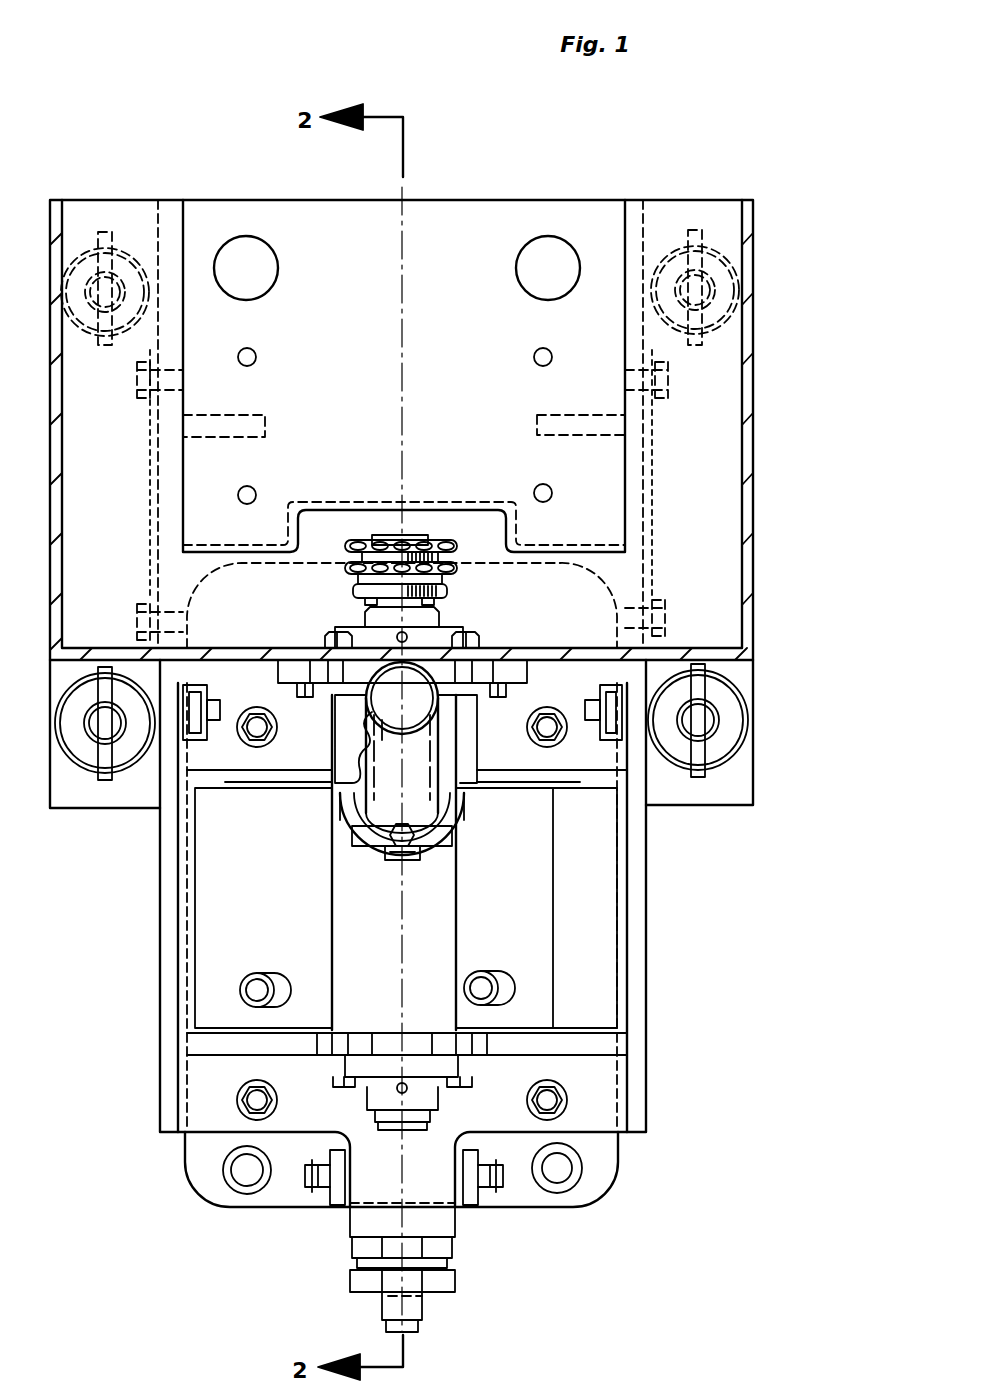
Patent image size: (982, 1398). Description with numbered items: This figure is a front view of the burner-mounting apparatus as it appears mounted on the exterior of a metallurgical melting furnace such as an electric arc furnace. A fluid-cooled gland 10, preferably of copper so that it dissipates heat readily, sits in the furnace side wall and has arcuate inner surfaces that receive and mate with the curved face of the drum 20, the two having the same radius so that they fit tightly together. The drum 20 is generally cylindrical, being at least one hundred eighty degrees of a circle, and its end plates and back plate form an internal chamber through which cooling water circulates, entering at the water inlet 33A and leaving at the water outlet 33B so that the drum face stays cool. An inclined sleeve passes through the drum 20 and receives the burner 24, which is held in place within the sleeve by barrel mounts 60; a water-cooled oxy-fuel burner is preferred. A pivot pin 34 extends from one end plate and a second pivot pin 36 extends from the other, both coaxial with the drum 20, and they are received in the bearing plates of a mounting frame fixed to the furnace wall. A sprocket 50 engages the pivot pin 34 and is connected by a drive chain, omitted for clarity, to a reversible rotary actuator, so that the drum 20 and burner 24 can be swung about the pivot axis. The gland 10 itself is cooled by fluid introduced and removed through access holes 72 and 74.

The fluid-cooled gland 10 is at (185, 1163).
The drum 20 is at (627, 892).
The burner 24 is at (382, 793).
The water inlet 33A is at (275, 972).
The water outlet 33B is at (500, 970).
The pivot pin 34 is at (405, 535).
The second pivot pin 36 is at (385, 1140).
The sprocket 50 is at (455, 568).
The barrel mounts 60 is at (458, 808).
The access hole 72 is at (243, 1193).
The access hole 74 is at (560, 1191).